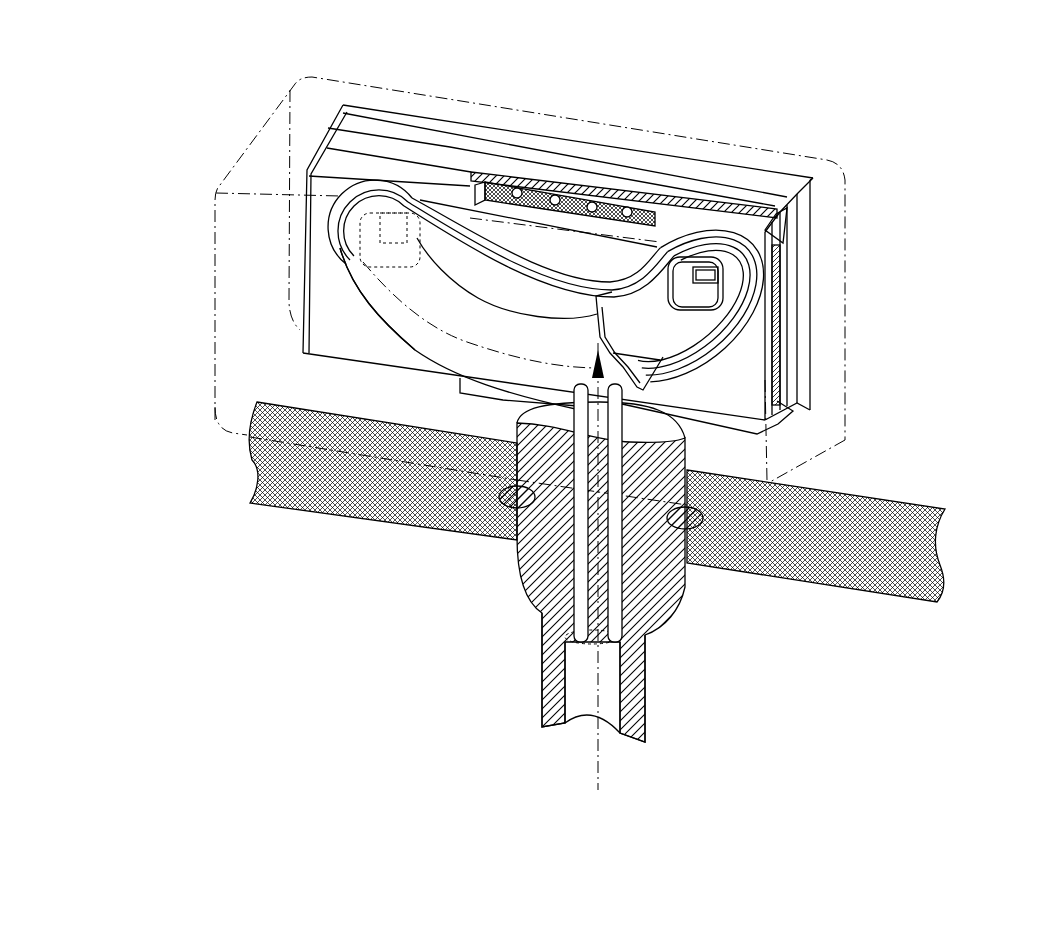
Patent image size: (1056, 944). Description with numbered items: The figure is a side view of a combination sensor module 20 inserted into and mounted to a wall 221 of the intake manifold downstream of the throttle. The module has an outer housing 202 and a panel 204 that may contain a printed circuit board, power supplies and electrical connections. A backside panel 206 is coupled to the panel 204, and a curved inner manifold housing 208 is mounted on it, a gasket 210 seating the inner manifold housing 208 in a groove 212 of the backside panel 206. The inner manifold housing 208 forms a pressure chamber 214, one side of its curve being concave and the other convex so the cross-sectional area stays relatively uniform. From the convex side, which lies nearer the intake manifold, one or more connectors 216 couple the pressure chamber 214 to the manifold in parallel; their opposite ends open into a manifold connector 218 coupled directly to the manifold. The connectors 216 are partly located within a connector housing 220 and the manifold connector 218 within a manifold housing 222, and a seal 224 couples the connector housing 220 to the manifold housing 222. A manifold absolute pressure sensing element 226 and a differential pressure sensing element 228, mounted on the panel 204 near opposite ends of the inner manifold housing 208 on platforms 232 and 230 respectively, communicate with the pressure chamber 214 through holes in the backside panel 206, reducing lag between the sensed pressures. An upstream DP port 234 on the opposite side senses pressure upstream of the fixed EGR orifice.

The combination sensor module 20 is at (937, 77).
The outer housing 202 is at (214, 232).
The panel 204 is at (564, 183).
The backside panel 206 is at (678, 237).
The inner manifold housing 208 is at (365, 306).
The gasket 210 is at (703, 240).
The groove 212 is at (815, 177).
The pressure chamber 214 is at (360, 280).
The connectors 216 is at (623, 592).
The manifold connector 218 is at (647, 660).
The connector housing 220 is at (687, 468).
The wall 221 is at (887, 500).
The manifold housing 222 is at (645, 731).
The seal 224 is at (704, 520).
The manifold absolute pressure sensing element 226 is at (707, 275).
The differential pressure sensing element 228 is at (392, 232).
The platform 230 is at (383, 255).
The platform 232 is at (715, 312).
The upstream DP port 234 is at (407, 143).